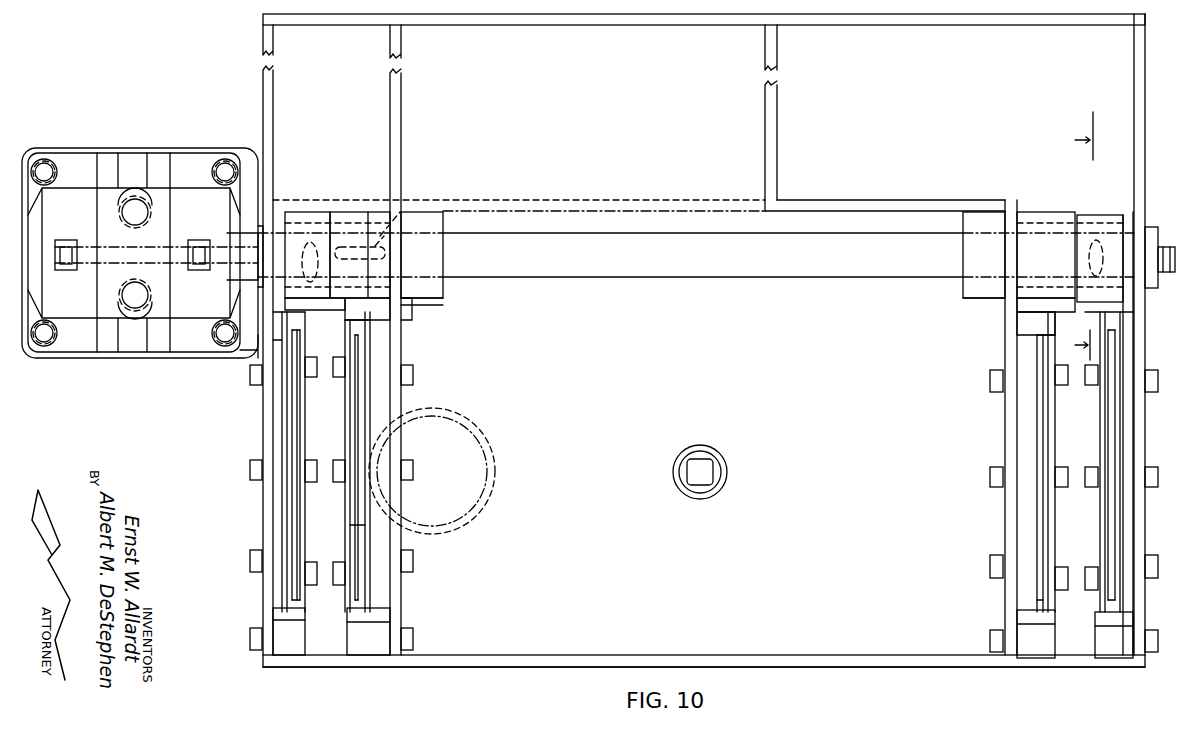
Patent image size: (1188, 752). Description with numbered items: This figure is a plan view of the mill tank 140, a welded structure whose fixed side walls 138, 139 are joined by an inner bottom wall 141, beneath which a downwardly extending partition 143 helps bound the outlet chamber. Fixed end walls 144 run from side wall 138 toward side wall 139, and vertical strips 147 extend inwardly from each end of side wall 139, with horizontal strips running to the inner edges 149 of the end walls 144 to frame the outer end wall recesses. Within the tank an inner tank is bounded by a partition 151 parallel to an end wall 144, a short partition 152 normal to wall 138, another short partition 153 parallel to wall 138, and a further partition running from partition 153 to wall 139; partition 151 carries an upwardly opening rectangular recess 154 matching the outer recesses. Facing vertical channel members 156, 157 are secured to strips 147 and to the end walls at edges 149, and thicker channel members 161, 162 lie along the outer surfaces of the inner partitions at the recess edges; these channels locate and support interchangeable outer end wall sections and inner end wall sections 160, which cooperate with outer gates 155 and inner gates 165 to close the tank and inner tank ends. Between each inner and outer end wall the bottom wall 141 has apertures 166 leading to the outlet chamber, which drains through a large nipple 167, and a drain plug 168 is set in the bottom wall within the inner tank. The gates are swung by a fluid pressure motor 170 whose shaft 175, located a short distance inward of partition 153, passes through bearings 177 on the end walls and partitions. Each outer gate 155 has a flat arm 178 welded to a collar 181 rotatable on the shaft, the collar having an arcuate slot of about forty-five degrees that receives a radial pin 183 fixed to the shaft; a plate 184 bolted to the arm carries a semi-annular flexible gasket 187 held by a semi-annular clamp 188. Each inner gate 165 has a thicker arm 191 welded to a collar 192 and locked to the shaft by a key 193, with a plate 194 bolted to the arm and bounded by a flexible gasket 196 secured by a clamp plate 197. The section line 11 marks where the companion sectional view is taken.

The section line 11 is at (1074, 236).
The fixed side wall 138 is at (605, 14).
The fixed side wall 139 is at (548, 657).
The mill tank 140 is at (698, 376).
The inner bottom wall 141 is at (822, 640).
The partition 143 is at (618, 200).
The fixed end wall 144 is at (274, 118).
The vertical strip 147 is at (268, 660).
The inner edge of end wall 149 is at (268, 335).
The partition 151 is at (398, 168).
The short partition 152 is at (770, 136).
The short partition 153 is at (855, 205).
The rectangular recess 154 is at (398, 360).
The outer gate 155 is at (286, 430).
The vertical channel member 156 is at (300, 628).
The vertical channel member 157 is at (296, 322).
The inner end wall section 160 is at (398, 592).
The vertical channel member 161 is at (372, 636).
The vertical channel member 162 is at (430, 300).
The inner gate 165 is at (384, 410).
The aperture 166 is at (358, 530).
The nipple 167 is at (497, 458).
The drain plug 168 is at (700, 475).
The fluid pressure motor 170 is at (185, 195).
The shaft 175 is at (656, 262).
The bearing 177 is at (441, 212).
The flat arm 178 is at (300, 212).
The collar 181 is at (322, 212).
The radial pin 183 is at (325, 268).
The plate 184 is at (278, 398).
The flexible gasket 187 is at (305, 490).
The clamp 188 is at (305, 505).
The flat arm 191 is at (382, 330).
The collar 192 is at (346, 212).
The key 193 is at (414, 196).
The plate 194 is at (365, 525).
The flexible gasket 196 is at (346, 396).
The plate 197 is at (346, 440).